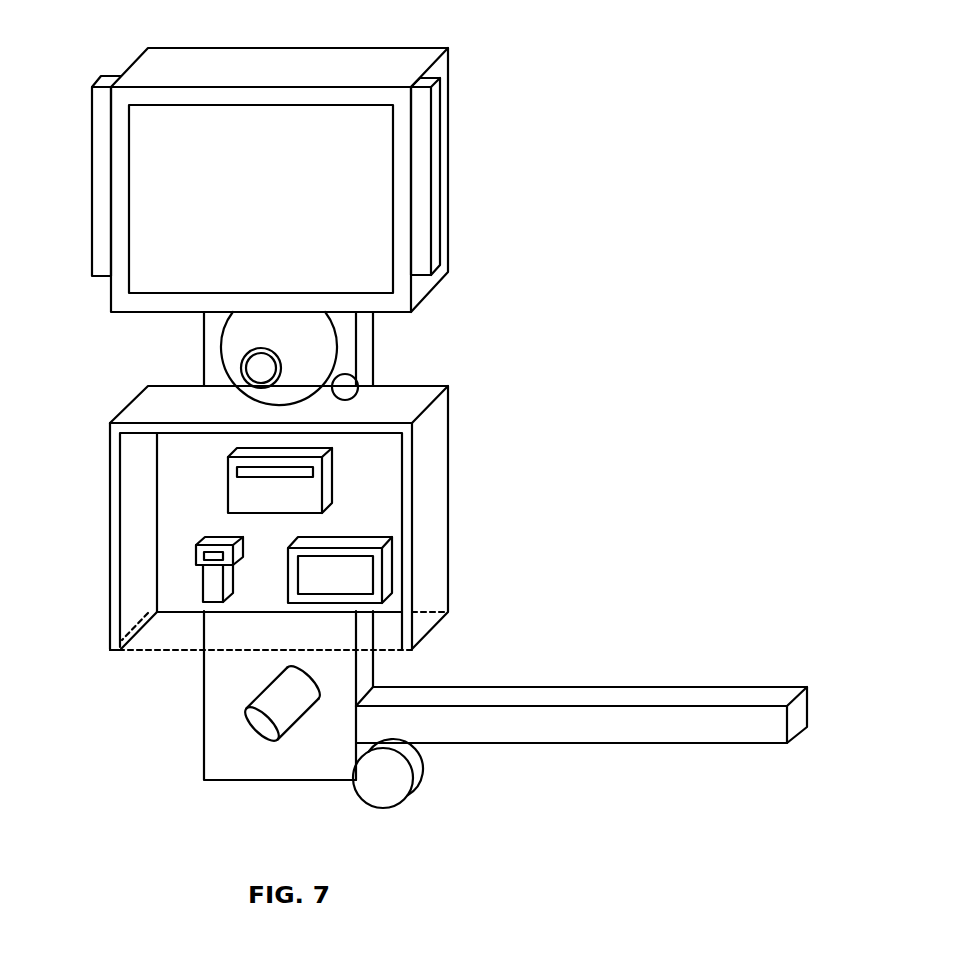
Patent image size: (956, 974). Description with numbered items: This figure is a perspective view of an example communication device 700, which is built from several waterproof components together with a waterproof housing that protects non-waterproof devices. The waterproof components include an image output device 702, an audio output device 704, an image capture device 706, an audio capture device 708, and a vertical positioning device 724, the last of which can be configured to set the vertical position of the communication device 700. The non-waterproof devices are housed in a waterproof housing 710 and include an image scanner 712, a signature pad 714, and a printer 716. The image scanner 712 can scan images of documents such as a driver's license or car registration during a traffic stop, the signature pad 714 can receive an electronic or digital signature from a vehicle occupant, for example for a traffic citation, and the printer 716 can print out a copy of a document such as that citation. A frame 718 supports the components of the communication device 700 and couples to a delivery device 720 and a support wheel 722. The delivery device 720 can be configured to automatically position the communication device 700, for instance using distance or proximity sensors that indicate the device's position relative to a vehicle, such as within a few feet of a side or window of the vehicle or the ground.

The communication device 700 is at (510, 27).
The image output device 702 is at (276, 210).
The audio output device 704 is at (422, 163).
The image capture device 706 is at (337, 360).
The audio capture device 708 is at (345, 386).
The waterproof housing 710 is at (428, 462).
The image scanner 712 is at (233, 563).
The signature pad 714 is at (355, 575).
The printer 716 is at (297, 500).
The frame 718 is at (357, 378).
The delivery device 720 is at (588, 697).
The support wheel 722 is at (397, 782).
The vertical positioning device 724 is at (297, 688).